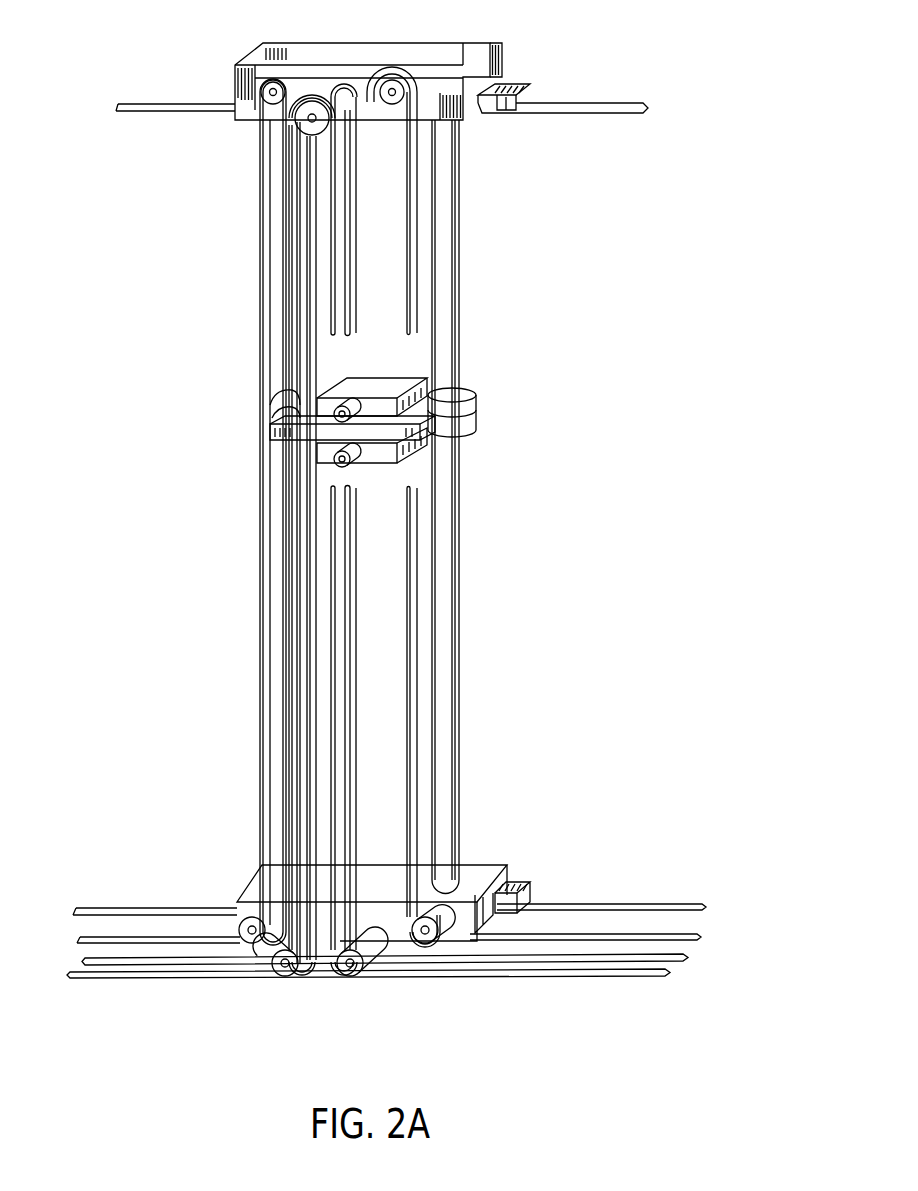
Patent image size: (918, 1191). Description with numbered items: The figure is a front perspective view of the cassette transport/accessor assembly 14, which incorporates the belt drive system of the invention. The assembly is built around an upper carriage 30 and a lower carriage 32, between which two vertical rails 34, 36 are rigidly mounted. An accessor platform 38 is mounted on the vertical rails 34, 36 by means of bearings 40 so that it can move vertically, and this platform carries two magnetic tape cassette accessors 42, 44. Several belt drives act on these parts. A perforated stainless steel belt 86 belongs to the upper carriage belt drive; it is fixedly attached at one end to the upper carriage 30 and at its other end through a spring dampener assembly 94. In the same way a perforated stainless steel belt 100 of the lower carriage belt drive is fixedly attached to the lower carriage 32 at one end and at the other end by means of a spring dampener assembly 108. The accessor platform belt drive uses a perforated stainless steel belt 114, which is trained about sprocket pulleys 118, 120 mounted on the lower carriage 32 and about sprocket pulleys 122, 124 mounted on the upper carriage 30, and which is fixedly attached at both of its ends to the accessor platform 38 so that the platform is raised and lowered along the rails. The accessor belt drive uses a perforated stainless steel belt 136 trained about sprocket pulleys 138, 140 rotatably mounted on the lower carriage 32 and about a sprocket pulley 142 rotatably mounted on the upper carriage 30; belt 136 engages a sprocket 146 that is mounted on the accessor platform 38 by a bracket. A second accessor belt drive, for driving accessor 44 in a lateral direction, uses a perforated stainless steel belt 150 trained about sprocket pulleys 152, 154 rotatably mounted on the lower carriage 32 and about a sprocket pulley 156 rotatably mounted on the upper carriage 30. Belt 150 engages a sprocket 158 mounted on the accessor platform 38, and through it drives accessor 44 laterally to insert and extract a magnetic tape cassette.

The cassette transport/accessor assembly 14 is at (503, 310).
The upper carriage 30 is at (503, 67).
The lower carriage 32 is at (510, 872).
The vertical rail 34 is at (460, 268).
The vertical rail 36 is at (298, 720).
The accessor platform 38 is at (478, 420).
The bearings 40 is at (280, 401).
The magnetic tape cassette accessor 42 is at (370, 388).
The magnetic tape cassette accessor 44 is at (378, 457).
The perforated stainless steel belt 86 is at (168, 106).
The spring dampener assembly 94 is at (513, 110).
The perforated stainless steel belt 100 is at (150, 907).
The spring dampener assembly 108 is at (530, 890).
The perforated stainless steel belt 114 is at (258, 637).
The sprocket pulley 118 is at (240, 926).
The sprocket pulley 120 is at (416, 928).
The sprocket pulley 122 is at (266, 80).
The sprocket pulley 124 is at (422, 62).
The perforated stainless steel belt 136 is at (355, 667).
The sprocket pulley 138 is at (258, 945).
The sprocket pulley 140 is at (387, 942).
The sprocket pulley 142 is at (367, 92).
The sprocket 146 is at (325, 415).
The perforated stainless steel belt 150 is at (448, 978).
The sprocket pulley 152 is at (348, 977).
The sprocket pulley 154 is at (285, 977).
The sprocket pulley 156 is at (305, 125).
The sprocket 158 is at (333, 462).